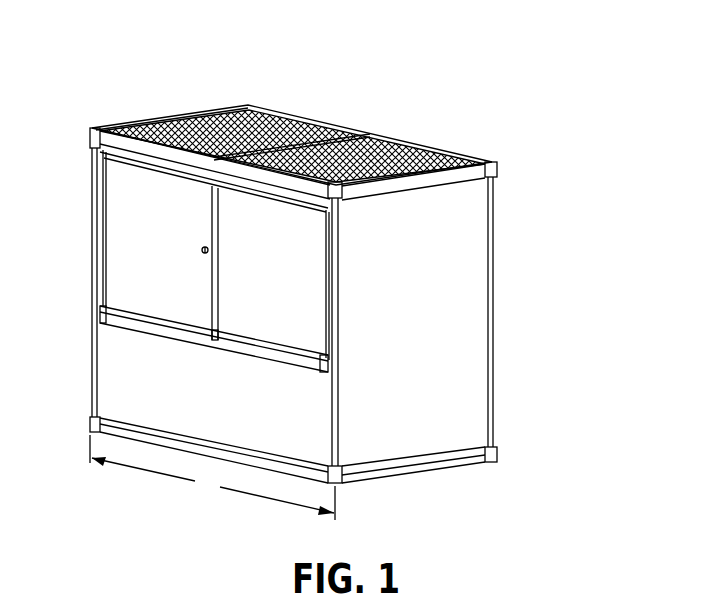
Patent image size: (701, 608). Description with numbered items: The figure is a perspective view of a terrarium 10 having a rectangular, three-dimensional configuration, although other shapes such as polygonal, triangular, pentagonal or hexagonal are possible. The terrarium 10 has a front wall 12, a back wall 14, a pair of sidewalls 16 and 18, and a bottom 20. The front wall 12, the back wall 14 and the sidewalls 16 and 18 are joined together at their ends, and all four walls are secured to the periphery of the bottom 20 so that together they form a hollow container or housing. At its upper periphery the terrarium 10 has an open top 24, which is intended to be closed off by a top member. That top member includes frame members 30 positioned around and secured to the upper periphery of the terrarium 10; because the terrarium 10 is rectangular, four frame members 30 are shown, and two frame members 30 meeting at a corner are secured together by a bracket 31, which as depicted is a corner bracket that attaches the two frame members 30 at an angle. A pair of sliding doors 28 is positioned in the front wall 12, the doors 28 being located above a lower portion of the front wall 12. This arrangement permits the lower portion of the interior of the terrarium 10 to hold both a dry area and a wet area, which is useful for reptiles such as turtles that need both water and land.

The terrarium 10 is at (537, 41).
The front wall 12 is at (198, 403).
The back wall 14 is at (428, 146).
The sidewall 16 is at (398, 308).
The sidewall 18 is at (153, 122).
The bottom 20 is at (408, 472).
The open top 24 is at (219, 94).
The door 28 is at (138, 263).
The frame member 30 is at (190, 113).
The bracket 31 is at (250, 107).